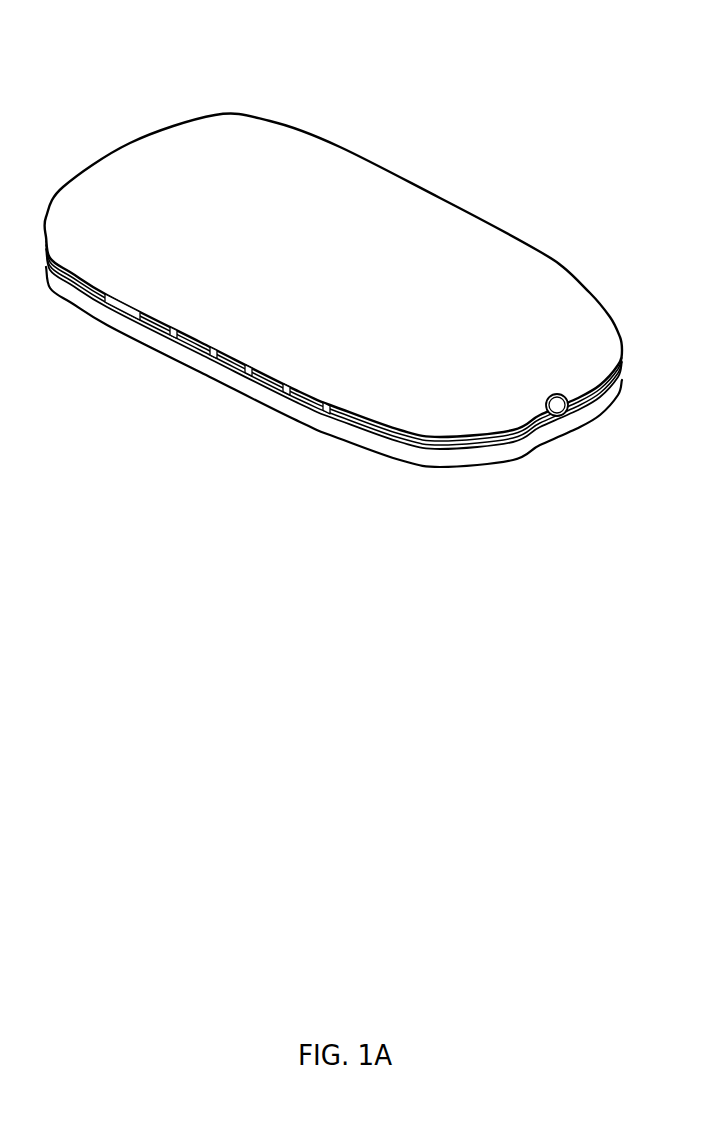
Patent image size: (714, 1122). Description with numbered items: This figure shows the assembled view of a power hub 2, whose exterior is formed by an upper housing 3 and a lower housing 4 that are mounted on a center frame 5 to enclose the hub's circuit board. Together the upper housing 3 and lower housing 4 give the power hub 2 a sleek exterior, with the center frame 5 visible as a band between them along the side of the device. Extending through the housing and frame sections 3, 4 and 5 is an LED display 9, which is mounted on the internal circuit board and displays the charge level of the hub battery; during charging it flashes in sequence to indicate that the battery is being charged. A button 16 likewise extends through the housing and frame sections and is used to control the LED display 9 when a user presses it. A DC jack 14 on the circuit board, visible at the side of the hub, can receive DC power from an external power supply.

The power hub 2 is at (95, 92).
The upper housing 3 is at (372, 177).
The lower housing 4 is at (393, 452).
The center frame 5 is at (497, 438).
The LED display 9 is at (248, 373).
The DC jack 14 is at (562, 410).
The button 16 is at (123, 305).